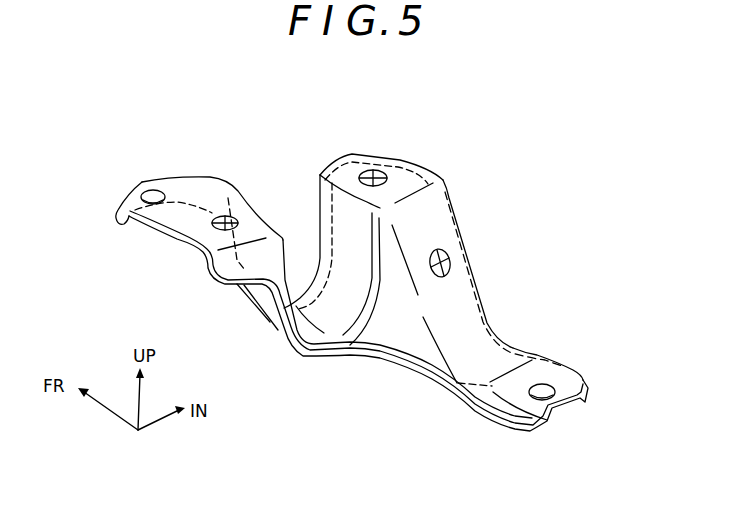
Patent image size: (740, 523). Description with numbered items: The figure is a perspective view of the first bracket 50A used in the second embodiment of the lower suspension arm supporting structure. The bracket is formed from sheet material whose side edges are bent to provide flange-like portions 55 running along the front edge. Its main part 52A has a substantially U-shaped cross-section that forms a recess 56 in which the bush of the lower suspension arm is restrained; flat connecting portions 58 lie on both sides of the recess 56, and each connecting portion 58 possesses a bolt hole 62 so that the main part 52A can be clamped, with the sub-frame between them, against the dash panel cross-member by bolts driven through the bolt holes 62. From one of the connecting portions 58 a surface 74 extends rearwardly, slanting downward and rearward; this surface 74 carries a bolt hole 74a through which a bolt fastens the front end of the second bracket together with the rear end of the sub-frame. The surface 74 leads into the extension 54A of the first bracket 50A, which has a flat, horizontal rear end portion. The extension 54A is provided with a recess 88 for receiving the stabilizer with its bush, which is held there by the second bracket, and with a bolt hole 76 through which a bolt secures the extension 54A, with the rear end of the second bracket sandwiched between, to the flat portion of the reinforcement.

The first bracket 50A is at (436, 148).
The main part 52A is at (359, 148).
The extension 54A is at (565, 364).
The flange-like portions 55 is at (343, 347).
The recess 56 is at (340, 217).
The connecting portions 58 is at (173, 226).
The bolt hole 62 is at (222, 217).
The surface 74 is at (462, 312).
The bolt hole 74a is at (450, 262).
The bolt hole 76 is at (554, 397).
The recess 88 is at (496, 366).